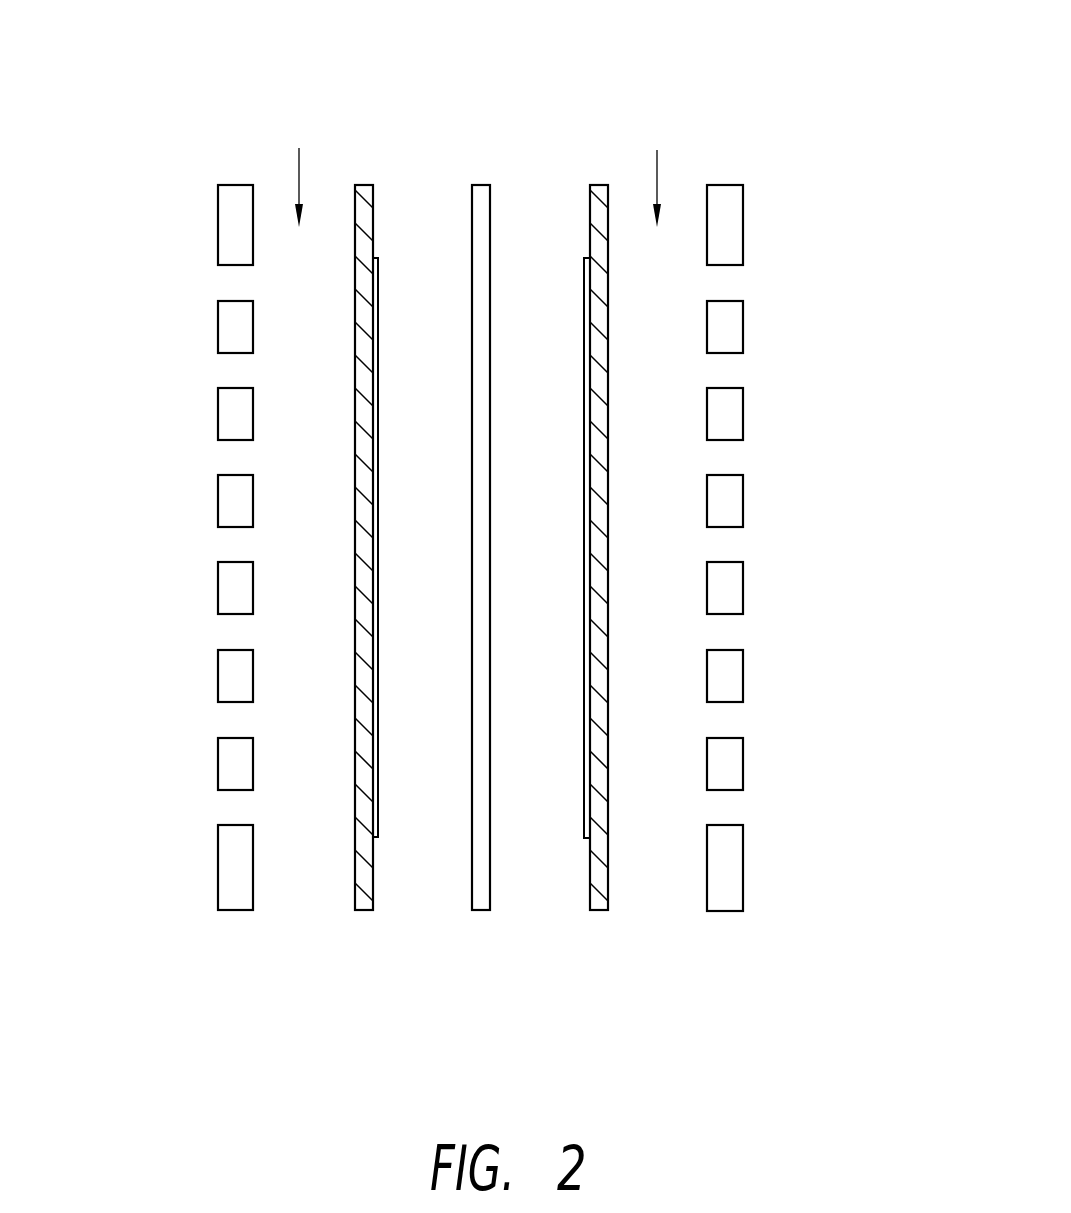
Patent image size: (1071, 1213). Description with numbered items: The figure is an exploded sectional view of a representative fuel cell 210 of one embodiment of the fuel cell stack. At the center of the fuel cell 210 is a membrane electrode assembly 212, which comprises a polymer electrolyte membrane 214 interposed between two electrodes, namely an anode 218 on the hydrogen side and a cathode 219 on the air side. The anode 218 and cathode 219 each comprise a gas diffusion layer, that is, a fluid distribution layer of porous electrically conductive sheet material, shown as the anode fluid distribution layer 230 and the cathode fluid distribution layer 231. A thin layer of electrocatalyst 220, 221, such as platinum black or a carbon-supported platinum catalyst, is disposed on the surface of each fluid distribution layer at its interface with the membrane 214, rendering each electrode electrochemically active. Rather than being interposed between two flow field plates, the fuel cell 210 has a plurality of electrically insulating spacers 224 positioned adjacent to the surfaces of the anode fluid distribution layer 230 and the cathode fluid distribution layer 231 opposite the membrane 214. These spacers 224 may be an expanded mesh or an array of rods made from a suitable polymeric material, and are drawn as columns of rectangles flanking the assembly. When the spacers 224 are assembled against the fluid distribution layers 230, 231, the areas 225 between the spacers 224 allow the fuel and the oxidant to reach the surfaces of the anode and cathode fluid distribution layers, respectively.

The fuel cell 210 is at (744, 87).
The membrane electrode assembly 212 is at (481, 577).
The polymer electrolyte membrane 214 is at (477, 913).
The anode 218 is at (345, 913).
The cathode 219 is at (615, 914).
The electrocatalyst layer 220 is at (378, 330).
The electrocatalyst layer 221 is at (585, 288).
The electrically insulating spacers 224 is at (237, 889).
The areas between spacers 225 is at (230, 718).
The anode fluid distribution layer 230 is at (355, 318).
The cathode fluid distribution layer 231 is at (608, 278).